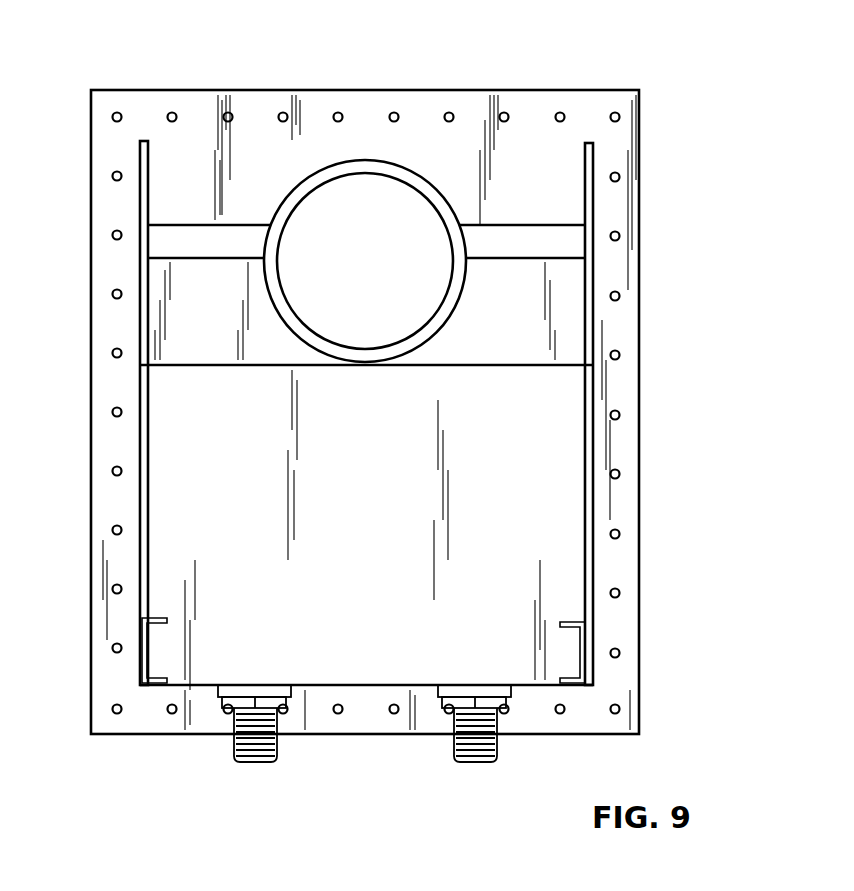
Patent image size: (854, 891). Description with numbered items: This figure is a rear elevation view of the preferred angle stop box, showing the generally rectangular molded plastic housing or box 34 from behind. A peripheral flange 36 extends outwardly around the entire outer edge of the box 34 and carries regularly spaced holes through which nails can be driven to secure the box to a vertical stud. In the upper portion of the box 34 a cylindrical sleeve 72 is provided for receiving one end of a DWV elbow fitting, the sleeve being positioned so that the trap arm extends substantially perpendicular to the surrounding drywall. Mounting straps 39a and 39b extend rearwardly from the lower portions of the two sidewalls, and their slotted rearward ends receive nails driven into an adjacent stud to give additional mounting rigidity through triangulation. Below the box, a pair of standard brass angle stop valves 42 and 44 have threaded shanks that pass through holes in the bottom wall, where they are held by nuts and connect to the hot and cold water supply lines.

The peripheral flange 36 is at (640, 437).
The housing or box 34 is at (377, 516).
The cylindrical sleeve 72 is at (364, 350).
The mounting strap 39a is at (560, 625).
The mounting strap 39b is at (168, 620).
The angle stop valve 42 is at (475, 766).
The angle stop valve 44 is at (255, 765).